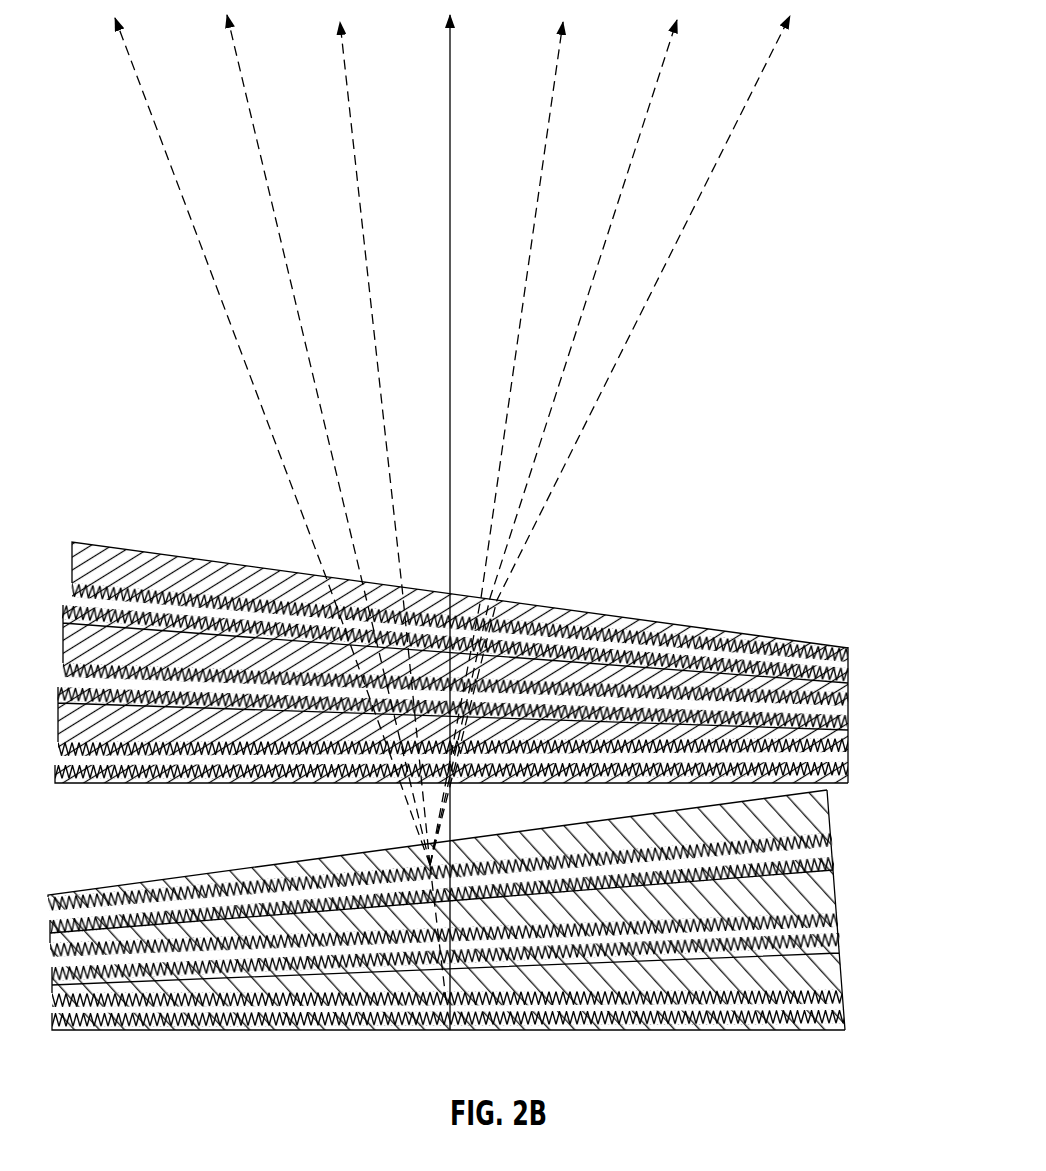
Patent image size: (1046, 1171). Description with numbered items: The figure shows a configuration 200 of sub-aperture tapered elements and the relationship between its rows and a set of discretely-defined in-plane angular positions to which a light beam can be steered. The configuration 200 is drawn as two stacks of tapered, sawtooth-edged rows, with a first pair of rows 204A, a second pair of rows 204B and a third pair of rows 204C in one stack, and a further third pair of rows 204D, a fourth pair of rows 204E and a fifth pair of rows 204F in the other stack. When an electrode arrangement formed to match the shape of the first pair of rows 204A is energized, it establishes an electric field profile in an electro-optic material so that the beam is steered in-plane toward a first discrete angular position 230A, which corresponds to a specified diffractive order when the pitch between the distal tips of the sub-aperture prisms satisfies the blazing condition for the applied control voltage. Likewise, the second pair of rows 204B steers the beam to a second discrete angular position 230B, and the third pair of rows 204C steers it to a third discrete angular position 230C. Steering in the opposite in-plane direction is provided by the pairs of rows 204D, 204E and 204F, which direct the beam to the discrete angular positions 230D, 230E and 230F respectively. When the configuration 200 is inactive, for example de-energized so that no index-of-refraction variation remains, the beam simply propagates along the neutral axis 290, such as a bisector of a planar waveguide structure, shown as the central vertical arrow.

The configuration of sub-aperture tapered elements 200 is at (688, 540).
The first pair of rows 204A is at (851, 950).
The second pair of rows 204B is at (846, 868).
The third pair of rows 204C is at (842, 790).
The third pair of rows 204D is at (857, 738).
The fourth pair of rows 204E is at (857, 692).
The fifth pair of rows 204F is at (857, 647).
The first discrete angular position 230A is at (347, 72).
The second discrete angular position 230B is at (238, 72).
The third discrete angular position 230C is at (140, 87).
The discrete angular position 230D is at (555, 90).
The discrete angular position 230E is at (662, 67).
The discrete angular position 230F is at (725, 140).
The neutral axis 290 is at (450, 80).